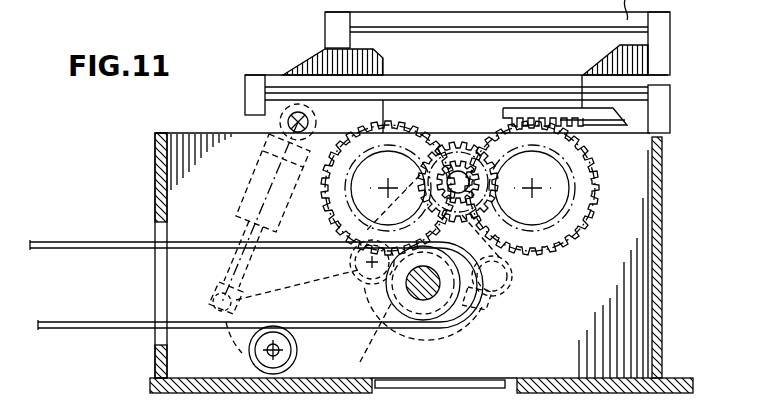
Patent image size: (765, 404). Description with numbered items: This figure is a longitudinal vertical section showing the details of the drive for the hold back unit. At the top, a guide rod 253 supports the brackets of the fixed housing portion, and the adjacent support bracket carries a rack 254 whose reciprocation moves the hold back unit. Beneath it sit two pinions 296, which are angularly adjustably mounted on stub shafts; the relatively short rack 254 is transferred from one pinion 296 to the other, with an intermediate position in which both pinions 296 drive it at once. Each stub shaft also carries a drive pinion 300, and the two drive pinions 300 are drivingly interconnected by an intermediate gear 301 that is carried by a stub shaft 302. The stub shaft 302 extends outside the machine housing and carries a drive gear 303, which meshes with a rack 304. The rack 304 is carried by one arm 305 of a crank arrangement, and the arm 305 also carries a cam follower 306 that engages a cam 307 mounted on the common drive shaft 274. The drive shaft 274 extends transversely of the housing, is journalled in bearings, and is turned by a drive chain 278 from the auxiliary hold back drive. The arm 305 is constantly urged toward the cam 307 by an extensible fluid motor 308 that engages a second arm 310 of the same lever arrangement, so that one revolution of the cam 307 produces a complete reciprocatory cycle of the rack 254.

The guide rod 253 is at (402, 90).
The rack 254 is at (560, 117).
The drive shaft 274 is at (432, 297).
The drive chain 278 is at (92, 242).
The pinion 296 is at (358, 131).
The drive pinion 300 is at (417, 132).
The intermediate gear 301 is at (441, 133).
The stub shaft 302 is at (486, 130).
The drive gear 303 is at (500, 152).
The rack 304 is at (504, 263).
The arm 305 is at (297, 290).
The cam follower 306 is at (357, 270).
The cam 307 is at (493, 303).
The extensible fluid motor 308 is at (262, 180).
The second arm 310 is at (222, 341).